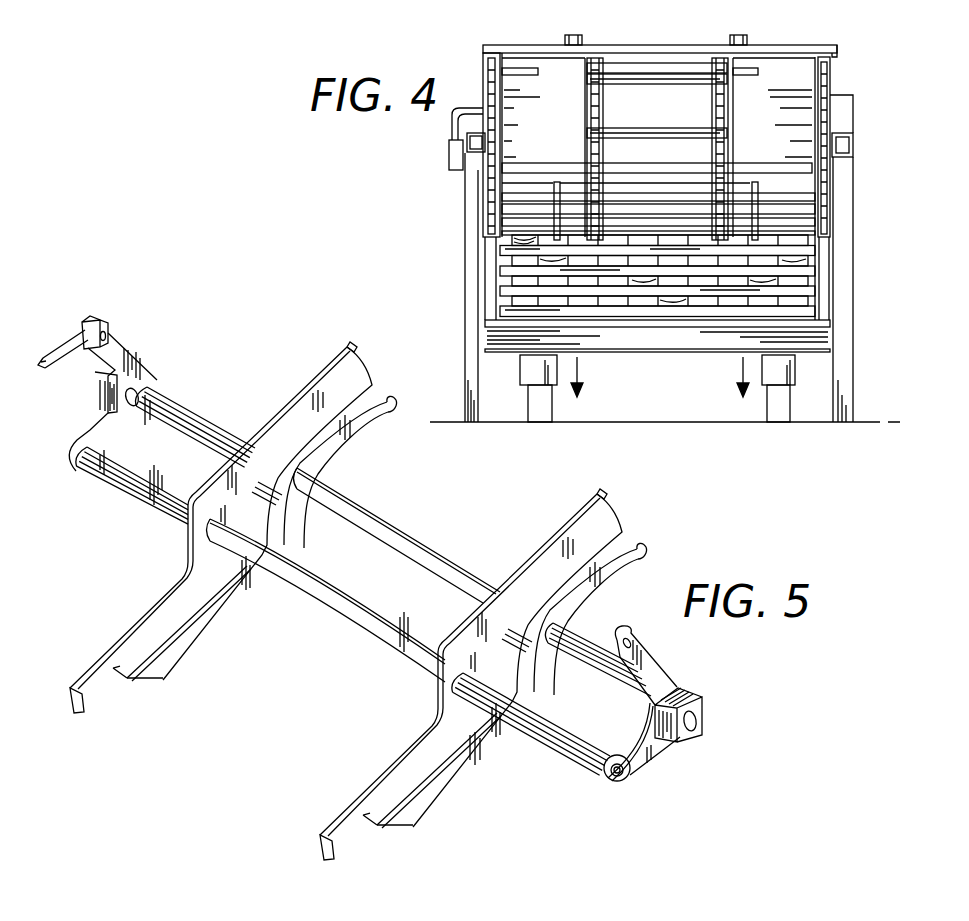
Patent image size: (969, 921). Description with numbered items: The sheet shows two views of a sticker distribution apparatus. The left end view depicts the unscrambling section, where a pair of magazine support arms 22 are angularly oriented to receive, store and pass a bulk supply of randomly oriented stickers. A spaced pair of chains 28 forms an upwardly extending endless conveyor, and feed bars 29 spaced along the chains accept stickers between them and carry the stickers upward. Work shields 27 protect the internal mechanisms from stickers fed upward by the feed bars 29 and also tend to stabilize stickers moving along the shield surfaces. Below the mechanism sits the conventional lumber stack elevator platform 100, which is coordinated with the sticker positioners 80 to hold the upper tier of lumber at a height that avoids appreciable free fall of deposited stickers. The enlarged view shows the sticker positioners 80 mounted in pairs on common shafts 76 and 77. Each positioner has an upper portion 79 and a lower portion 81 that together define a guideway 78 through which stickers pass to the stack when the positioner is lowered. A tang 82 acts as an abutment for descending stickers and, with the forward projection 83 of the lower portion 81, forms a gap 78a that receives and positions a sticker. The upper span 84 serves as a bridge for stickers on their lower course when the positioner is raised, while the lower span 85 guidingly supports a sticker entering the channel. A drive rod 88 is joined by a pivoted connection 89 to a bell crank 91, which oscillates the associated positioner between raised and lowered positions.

In FIG. 4, the magazine support arm 22 is at (554, 183).
In FIG. 4, the work shield 27 is at (537, 110).
In FIG. 4, the chain 28 is at (598, 63).
In FIG. 4, the feed bar 29 is at (726, 131).
In FIG. 4, the lumber stack elevator platform 100 is at (692, 360).
In FIG. 5, the common shaft 76 is at (402, 633).
In FIG. 5, the common shaft 77 is at (420, 557).
In FIG. 5, the guideway 78 is at (265, 483).
In FIG. 5, the gap 78a is at (113, 676).
In FIG. 5, the upper portion 79 is at (282, 433).
In FIG. 5, the sticker positioner 80 is at (317, 372).
In FIG. 5, the lower portion 81 is at (327, 445).
In FIG. 5, the tang 82 is at (86, 696).
In FIG. 5, the forward projection 83 is at (163, 678).
In FIG. 5, the upper span 84 is at (312, 389).
In FIG. 5, the lower span 85 is at (370, 397).
In FIG. 5, the drive rod 88 is at (67, 351).
In FIG. 5, the pivoted connection 89 is at (103, 327).
In FIG. 5, the bell crank 91 is at (648, 672).